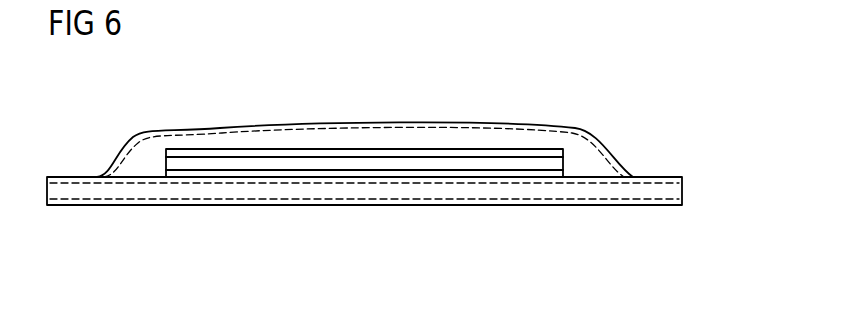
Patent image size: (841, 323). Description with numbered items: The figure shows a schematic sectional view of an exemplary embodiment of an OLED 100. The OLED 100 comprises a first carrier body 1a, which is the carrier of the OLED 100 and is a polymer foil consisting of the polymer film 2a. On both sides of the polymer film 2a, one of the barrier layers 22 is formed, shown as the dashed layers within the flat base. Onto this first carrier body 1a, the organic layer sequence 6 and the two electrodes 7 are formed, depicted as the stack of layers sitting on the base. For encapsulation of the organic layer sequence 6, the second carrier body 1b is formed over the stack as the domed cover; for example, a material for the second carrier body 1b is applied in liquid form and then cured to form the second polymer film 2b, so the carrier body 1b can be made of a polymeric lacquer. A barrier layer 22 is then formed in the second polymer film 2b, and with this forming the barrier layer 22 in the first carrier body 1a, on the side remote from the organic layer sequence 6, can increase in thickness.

The OLED 100 is at (617, 101).
The first carrier body 1a is at (409, 194).
The polymer film 2a is at (674, 190).
The second carrier body 1b is at (365, 130).
The second polymer film 2b is at (161, 143).
The barrier layer 22 is at (285, 124).
The organic layer sequence 6 is at (497, 163).
The electrodes 7 is at (443, 175).